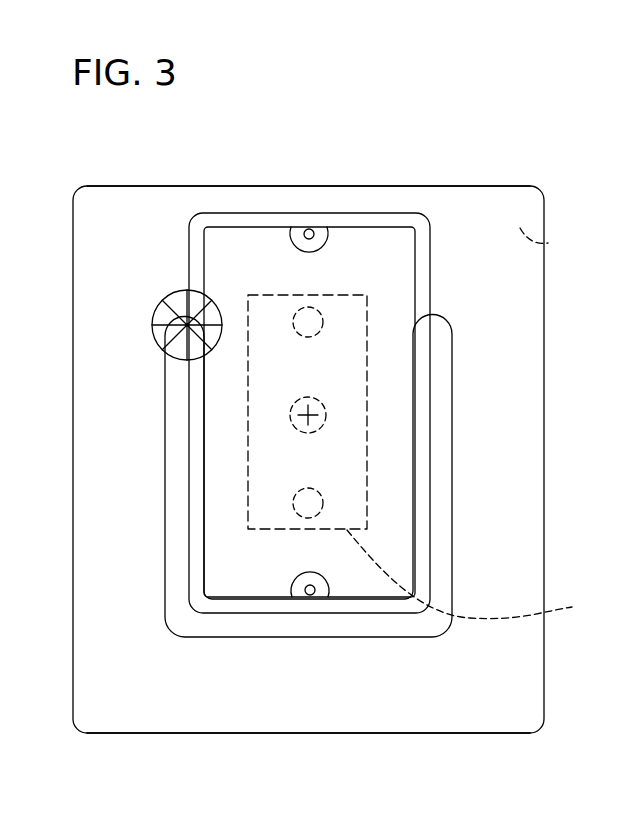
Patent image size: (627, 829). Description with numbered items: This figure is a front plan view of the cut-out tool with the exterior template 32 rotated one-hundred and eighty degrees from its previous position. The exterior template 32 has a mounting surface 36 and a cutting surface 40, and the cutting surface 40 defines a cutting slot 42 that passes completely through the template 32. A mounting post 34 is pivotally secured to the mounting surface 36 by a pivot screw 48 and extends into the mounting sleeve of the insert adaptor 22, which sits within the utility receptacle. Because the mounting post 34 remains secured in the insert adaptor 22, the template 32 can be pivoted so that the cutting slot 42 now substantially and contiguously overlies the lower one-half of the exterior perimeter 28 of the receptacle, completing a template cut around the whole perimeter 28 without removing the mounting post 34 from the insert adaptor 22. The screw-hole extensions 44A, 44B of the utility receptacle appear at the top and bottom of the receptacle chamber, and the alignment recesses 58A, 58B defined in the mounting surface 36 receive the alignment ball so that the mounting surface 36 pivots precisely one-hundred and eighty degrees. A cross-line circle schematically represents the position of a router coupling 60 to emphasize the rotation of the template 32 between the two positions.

The insert adaptor 22 is at (340, 221).
The exterior perimeter 28 is at (430, 248).
The exterior template 32 is at (393, 185).
The mounting post 34 is at (472, 574).
The mounting surface 36 is at (547, 243).
The cutting surface 40 is at (467, 710).
The cutting slot 42 is at (193, 620).
The screw-hole extension 44A is at (323, 593).
The screw-hole extension 44B is at (290, 235).
The pivot screw 48 is at (327, 417).
The alignment recess 58A is at (323, 505).
The alignment recess 58B is at (320, 313).
The router coupling 60 is at (178, 294).